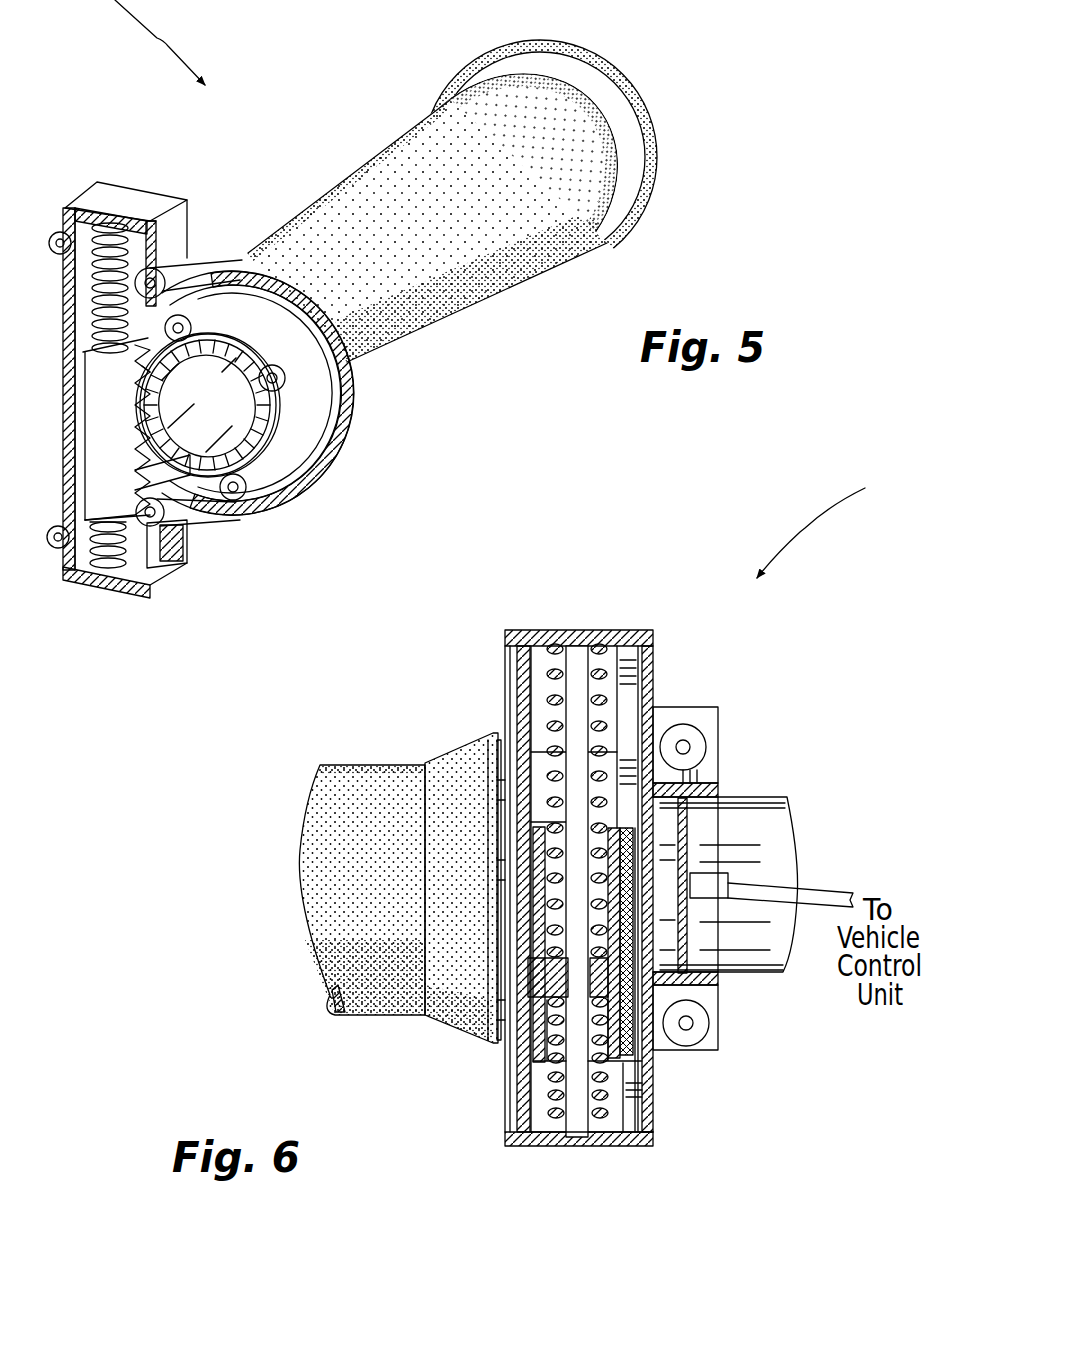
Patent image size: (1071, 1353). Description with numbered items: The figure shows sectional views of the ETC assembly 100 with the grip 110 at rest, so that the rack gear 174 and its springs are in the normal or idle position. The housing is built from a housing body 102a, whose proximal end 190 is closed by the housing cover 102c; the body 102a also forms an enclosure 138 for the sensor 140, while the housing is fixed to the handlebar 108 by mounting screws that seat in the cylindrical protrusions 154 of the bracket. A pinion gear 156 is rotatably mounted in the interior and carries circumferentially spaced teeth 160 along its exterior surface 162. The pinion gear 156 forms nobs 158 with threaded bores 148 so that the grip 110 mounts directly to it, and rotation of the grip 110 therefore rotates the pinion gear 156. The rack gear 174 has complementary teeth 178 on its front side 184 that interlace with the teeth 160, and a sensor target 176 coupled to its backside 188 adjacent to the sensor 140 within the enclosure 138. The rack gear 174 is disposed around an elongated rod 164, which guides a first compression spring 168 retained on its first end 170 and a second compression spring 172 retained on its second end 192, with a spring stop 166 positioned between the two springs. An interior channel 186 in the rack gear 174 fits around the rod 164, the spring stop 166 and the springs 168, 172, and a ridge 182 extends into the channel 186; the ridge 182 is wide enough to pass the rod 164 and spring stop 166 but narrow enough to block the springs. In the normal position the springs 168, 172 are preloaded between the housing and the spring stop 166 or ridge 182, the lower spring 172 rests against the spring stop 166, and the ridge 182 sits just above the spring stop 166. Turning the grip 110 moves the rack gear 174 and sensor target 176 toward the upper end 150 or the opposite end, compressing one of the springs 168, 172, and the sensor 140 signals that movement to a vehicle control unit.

In FIG. 6, the ETC assembly 100 is at (828, 523).
In FIG. 5, the housing body 102a is at (97, 182).
In FIG. 6, the housing body 102a is at (653, 657).
In FIG. 5, the housing cover 102c is at (140, 182).
In FIG. 6, the housing cover 102c is at (503, 658).
In FIG. 5, the handlebar 108 is at (262, 262).
In FIG. 6, the handlebar 108 is at (767, 802).
In FIG. 5, the grip 110 is at (519, 272).
In FIG. 6, the grip 110 is at (342, 765).
In FIG. 6, the enclosure 138 is at (725, 940).
In FIG. 6, the sensor 140 is at (683, 830).
In FIG. 5, the threaded bores 148 is at (233, 505).
In FIG. 5, the upper end 150 is at (200, 268).
In FIG. 6, the upper end 150 is at (493, 743).
In FIG. 5, the cylindrical protrusions 154 is at (97, 513).
In FIG. 5, the pinion gear 156 is at (318, 474).
In FIG. 6, the pinion gear 156 is at (510, 720).
In FIG. 5, the nobs 158 is at (277, 473).
In FIG. 5, the teeth 160 is at (97, 353).
In FIG. 5, the exterior surface 162 is at (262, 340).
In FIG. 5, the rod 164 is at (108, 590).
In FIG. 6, the rod 164 is at (580, 1100).
In FIG. 6, the spring stop 166 is at (557, 977).
In FIG. 5, the first compression spring 168 is at (90, 285).
In FIG. 6, the first compression spring 168 is at (548, 697).
In FIG. 6, the first end 170 is at (575, 640).
In FIG. 5, the second compression spring 172 is at (147, 595).
In FIG. 6, the second compression spring 172 is at (550, 1146).
In FIG. 5, the rack gear 174 is at (110, 413).
In FIG. 6, the rack gear 174 is at (538, 1088).
In FIG. 6, the sensor target 176 is at (655, 1087).
In FIG. 5, the teeth 178 is at (113, 440).
In FIG. 6, the ridge 182 is at (530, 965).
In FIG. 5, the front side 184 is at (117, 475).
In FIG. 5, the interior channel 186 is at (90, 323).
In FIG. 6, the backside 188 is at (545, 880).
In FIG. 6, the proximal end 190 is at (622, 622).
In FIG. 5, the second end 192 is at (90, 567).
In FIG. 6, the second end 192 is at (582, 1132).